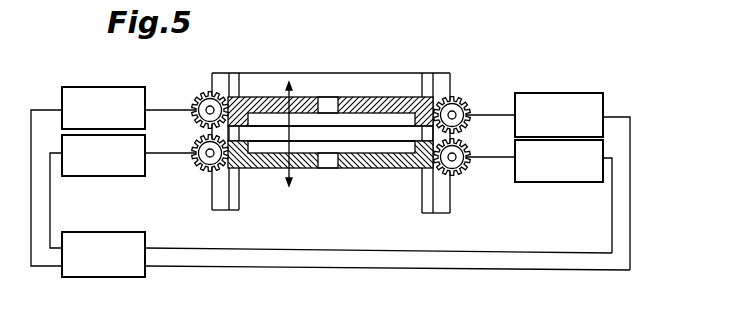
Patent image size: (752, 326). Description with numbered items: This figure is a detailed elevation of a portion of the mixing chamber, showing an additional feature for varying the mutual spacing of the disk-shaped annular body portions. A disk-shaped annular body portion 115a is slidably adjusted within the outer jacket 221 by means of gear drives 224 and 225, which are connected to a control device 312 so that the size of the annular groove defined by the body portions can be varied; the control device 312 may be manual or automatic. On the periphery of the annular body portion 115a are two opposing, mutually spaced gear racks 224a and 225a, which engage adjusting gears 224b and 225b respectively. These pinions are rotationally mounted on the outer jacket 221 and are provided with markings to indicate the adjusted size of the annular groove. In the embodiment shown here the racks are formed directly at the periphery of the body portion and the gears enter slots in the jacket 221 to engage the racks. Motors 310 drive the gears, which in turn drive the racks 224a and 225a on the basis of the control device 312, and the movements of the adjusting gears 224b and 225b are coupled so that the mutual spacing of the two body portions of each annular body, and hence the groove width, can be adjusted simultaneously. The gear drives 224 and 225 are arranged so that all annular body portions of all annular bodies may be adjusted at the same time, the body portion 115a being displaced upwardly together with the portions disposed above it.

The outer jacket 221 is at (442, 86).
The gear rack 225a is at (243, 100).
The gear rack 224a is at (243, 160).
The annular body portion 115a is at (393, 170).
The adjusting gear 225b is at (197, 97).
The adjusting gear 224b is at (190, 163).
The gear drive 225 is at (467, 125).
The gear drive 224 is at (467, 167).
The motor 310 is at (82, 87).
The control device 312 is at (102, 277).